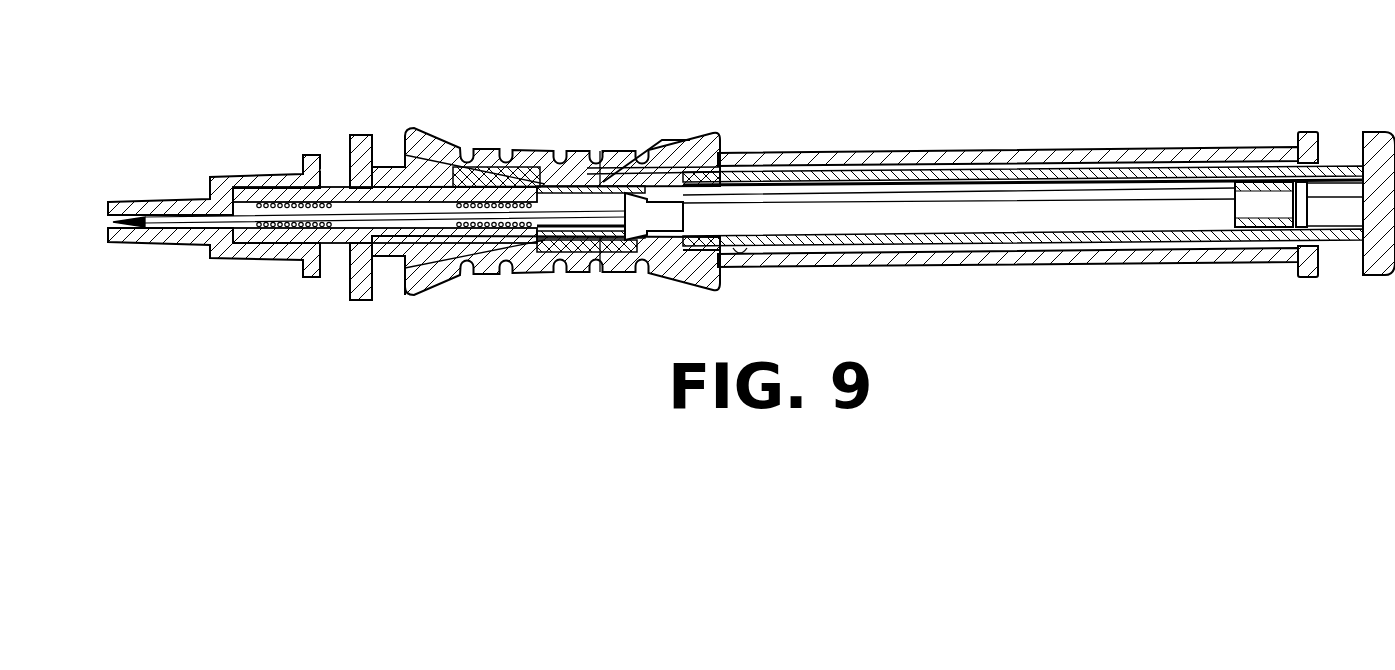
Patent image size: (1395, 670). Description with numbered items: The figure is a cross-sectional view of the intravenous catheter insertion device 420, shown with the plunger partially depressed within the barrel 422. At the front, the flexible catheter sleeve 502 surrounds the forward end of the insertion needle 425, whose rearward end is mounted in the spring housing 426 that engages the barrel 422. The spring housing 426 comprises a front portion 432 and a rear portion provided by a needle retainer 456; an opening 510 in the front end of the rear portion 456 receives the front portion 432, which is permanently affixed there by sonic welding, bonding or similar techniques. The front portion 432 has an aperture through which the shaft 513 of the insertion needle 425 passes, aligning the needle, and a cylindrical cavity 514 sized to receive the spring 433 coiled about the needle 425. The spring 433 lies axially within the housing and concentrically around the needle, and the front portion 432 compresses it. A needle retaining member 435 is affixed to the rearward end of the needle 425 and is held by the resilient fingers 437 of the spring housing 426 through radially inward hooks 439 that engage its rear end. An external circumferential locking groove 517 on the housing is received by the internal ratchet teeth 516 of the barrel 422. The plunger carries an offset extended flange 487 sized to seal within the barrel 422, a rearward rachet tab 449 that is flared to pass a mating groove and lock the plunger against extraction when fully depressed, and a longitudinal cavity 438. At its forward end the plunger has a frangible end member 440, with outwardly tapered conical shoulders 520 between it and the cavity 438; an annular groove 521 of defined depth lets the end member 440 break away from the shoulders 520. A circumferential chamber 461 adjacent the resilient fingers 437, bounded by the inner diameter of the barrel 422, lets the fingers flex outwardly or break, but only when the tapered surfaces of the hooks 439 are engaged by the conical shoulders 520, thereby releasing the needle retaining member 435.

The intravenous catheter insertion device 420 is at (859, 110).
The barrel 422 is at (1160, 265).
The insertion needle 425 is at (351, 302).
The spring housing 426 is at (333, 190).
The front portion 432 is at (328, 255).
The spring 433 is at (268, 207).
The needle retaining member 435 is at (517, 152).
The resilient fingers 437 is at (583, 152).
The longitudinal cavity 438 is at (1023, 207).
The hooks 439 is at (617, 275).
The frangible end member 440 is at (636, 190).
The rachet tab 449 is at (1265, 200).
The needle retainer 456 is at (392, 270).
The circumferential chamber 461 is at (624, 183).
The offset extended flange 487 is at (742, 252).
The catheter sleeve 502 is at (128, 200).
The opening 510 is at (336, 170).
The shaft 513 is at (172, 220).
The cylindrical cavity 514 is at (386, 136).
The internal ratchet teeth 516 is at (442, 274).
The external circumferential locking groove 517 is at (492, 275).
The outwardly tapered conical shoulders 520 is at (718, 152).
The annular groove 521 is at (687, 258).